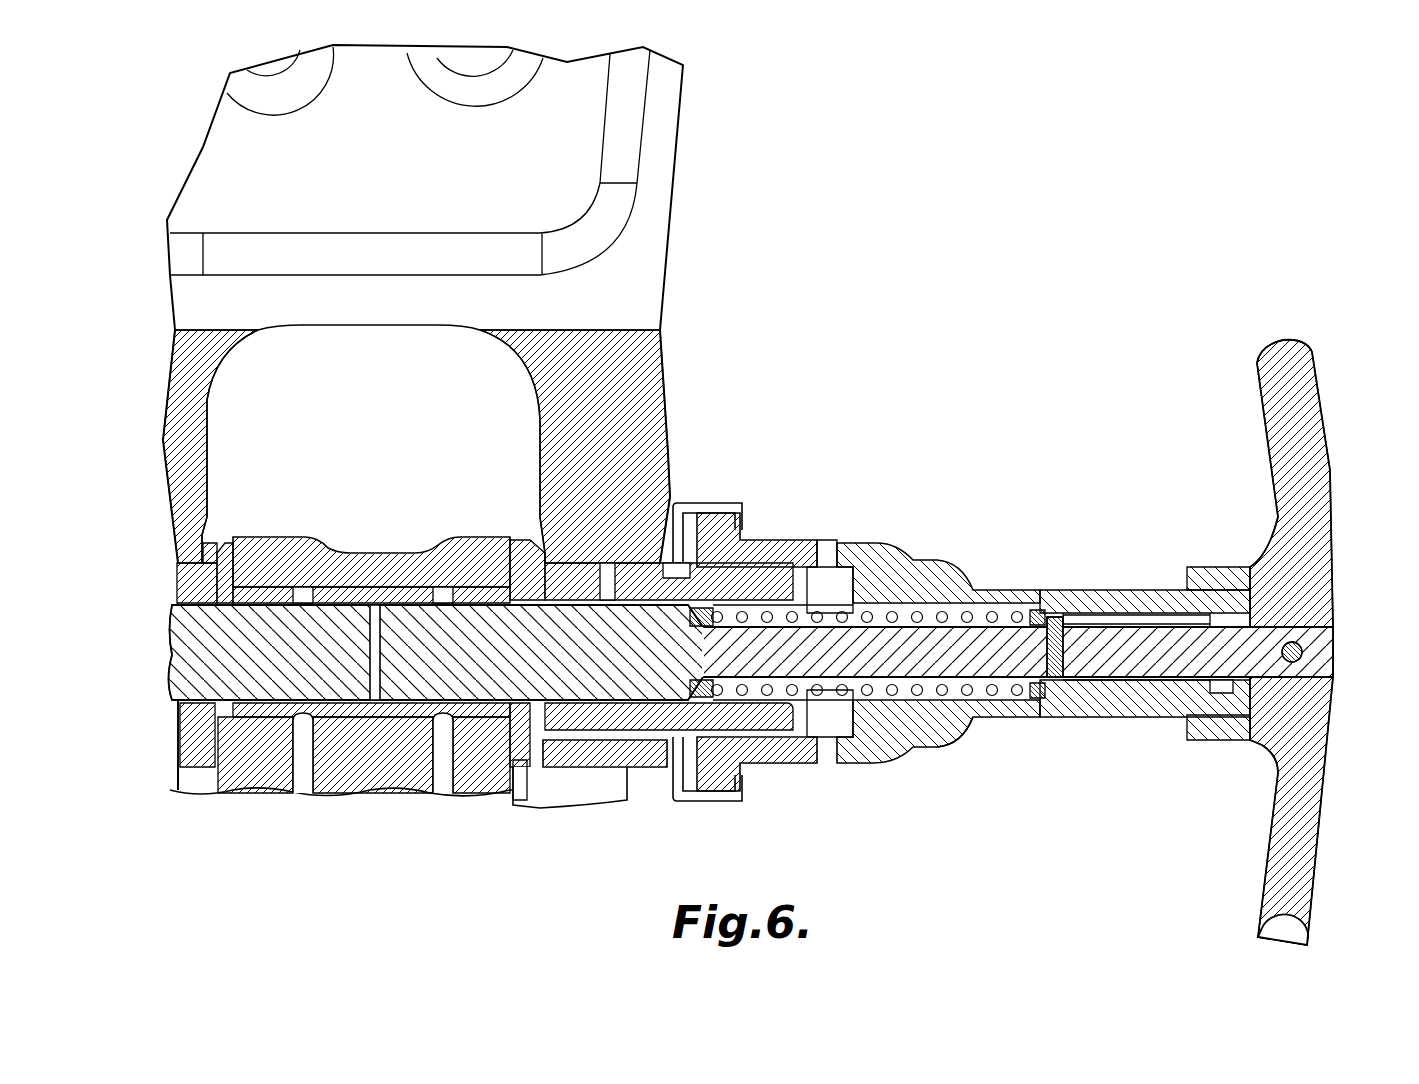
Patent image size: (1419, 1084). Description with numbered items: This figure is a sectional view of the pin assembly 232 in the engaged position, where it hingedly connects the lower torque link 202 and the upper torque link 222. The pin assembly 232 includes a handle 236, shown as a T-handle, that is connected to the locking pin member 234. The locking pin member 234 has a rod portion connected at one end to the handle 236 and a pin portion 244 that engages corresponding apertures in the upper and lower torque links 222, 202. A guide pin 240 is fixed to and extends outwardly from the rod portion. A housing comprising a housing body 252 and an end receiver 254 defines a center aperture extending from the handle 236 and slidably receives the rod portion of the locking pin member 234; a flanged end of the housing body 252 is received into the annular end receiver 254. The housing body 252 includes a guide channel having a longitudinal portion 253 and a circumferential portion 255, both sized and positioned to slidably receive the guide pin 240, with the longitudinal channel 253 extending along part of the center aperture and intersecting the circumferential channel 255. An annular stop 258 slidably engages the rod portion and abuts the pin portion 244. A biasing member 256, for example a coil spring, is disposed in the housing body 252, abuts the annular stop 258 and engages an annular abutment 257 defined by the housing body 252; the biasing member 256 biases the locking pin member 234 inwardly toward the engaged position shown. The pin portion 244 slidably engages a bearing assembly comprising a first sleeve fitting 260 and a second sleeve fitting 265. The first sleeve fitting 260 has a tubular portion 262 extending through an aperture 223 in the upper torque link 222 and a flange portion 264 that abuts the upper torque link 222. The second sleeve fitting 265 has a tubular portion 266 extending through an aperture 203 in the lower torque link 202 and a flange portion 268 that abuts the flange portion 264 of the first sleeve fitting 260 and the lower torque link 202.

The lower torque link 202 is at (272, 537).
The aperture 203 is at (372, 612).
The upper torque link 222 is at (672, 200).
The aperture 223 is at (640, 565).
The pin assembly 232 is at (1025, 487).
The locking pin member 234 is at (1108, 688).
The handle 236 is at (1323, 405).
The guide pin 240 is at (1065, 620).
The pin portion 244 is at (250, 632).
The housing body 252 is at (915, 558).
The longitudinal portion of guide channel 253 is at (1150, 610).
The end receiver 254 is at (730, 505).
The circumferential portion of guide channel 255 is at (1222, 693).
The biasing member 256 is at (950, 715).
The annular abutment 257 is at (1037, 695).
The annular stop 258 is at (703, 615).
The first sleeve fitting 260 is at (182, 722).
The tubular portion 262 is at (783, 727).
The flange portion 264 is at (570, 768).
The second sleeve fitting 265 is at (215, 768).
The tubular portion 266 is at (380, 705).
The flange portion 268 is at (520, 768).